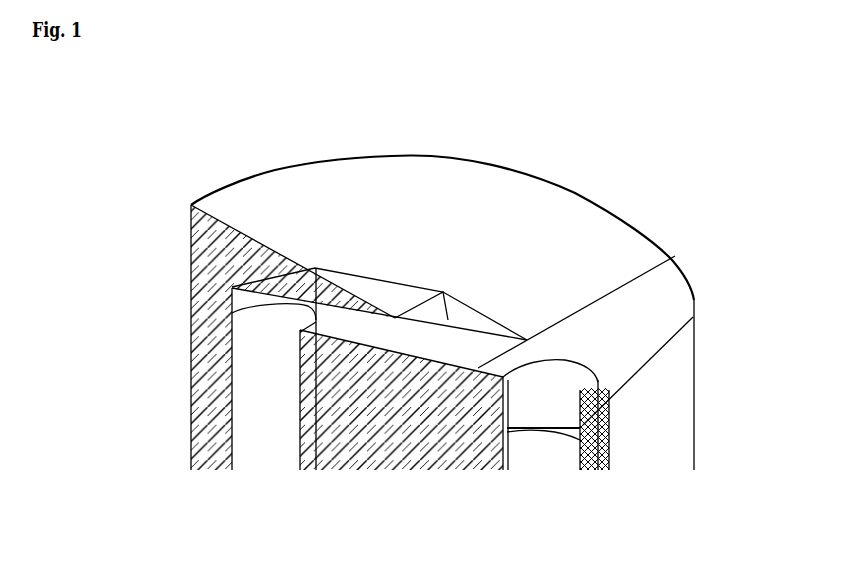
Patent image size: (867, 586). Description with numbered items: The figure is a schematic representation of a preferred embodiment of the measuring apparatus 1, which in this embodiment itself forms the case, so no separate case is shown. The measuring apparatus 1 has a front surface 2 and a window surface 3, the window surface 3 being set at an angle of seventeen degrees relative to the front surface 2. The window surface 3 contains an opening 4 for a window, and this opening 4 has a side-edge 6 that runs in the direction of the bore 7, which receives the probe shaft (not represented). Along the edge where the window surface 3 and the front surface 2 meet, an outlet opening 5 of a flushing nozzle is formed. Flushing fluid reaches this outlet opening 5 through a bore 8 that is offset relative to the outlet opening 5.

The measuring apparatus 1 is at (218, 163).
The front surface 2 is at (490, 195).
The window surface 3 is at (667, 310).
The opening 4 is at (567, 378).
The outlet opening 5 is at (433, 307).
The side-edge 6 is at (517, 436).
The bore 7 is at (530, 465).
The bore 8 is at (255, 462).